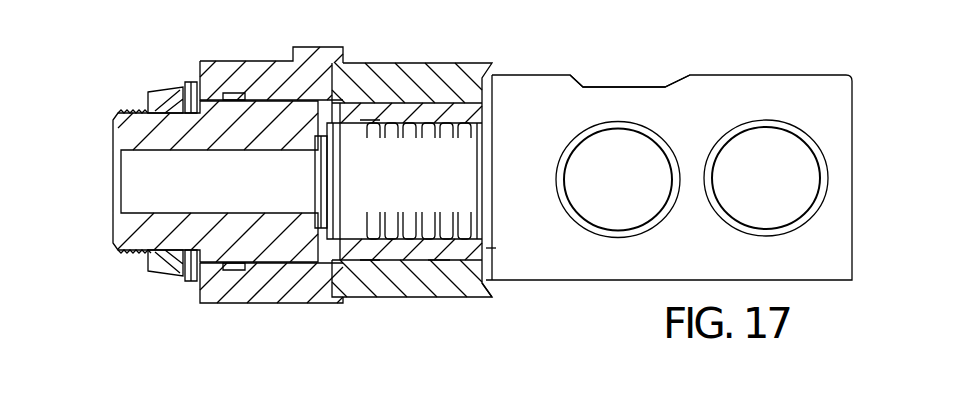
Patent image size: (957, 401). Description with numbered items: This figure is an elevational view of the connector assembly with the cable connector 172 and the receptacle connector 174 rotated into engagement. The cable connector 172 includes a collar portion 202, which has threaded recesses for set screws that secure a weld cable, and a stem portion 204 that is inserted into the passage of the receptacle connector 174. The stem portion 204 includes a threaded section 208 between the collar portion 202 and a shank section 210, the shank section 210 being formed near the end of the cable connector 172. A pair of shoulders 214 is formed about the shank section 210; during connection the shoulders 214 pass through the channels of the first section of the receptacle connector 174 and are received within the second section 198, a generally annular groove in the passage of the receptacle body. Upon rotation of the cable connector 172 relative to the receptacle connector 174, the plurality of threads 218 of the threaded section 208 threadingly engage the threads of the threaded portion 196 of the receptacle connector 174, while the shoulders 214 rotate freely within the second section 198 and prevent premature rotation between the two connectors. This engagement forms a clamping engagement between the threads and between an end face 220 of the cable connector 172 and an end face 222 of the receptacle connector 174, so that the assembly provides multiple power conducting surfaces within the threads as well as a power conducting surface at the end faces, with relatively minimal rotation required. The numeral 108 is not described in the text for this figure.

The connector body 108 is at (110, 126).
The receptacle connector 174 is at (232, 104).
The threaded portion 196 is at (433, 66).
The second section 198 is at (352, 100).
The shoulders 214 is at (350, 120).
The threads 218 is at (440, 138).
The threaded section 208 is at (400, 147).
The shank section 210 is at (320, 172).
The stem portion 204 is at (437, 260).
The end face 222 is at (484, 298).
The end face 220 is at (488, 250).
The collar portion 202 is at (820, 268).
The cable connector 172 is at (638, 102).